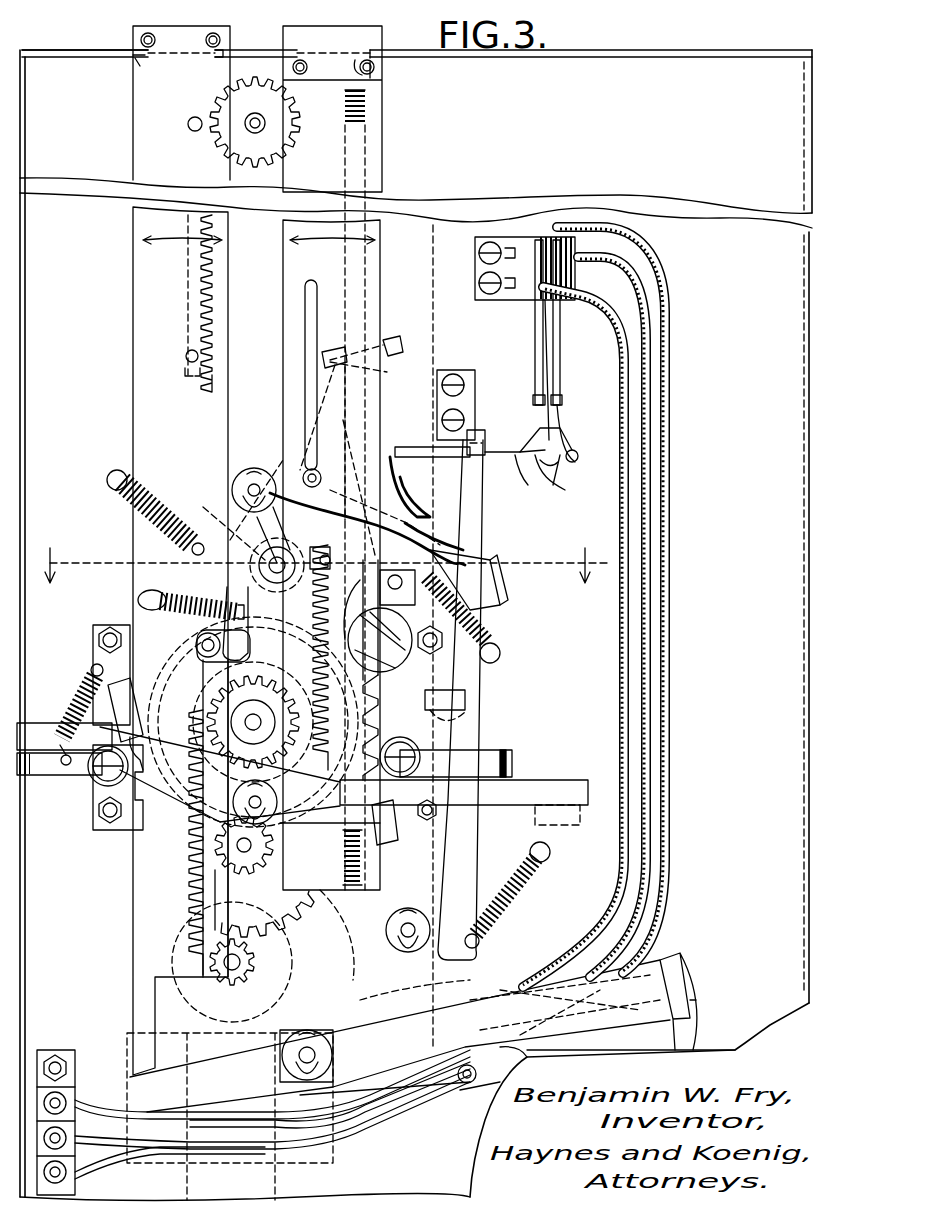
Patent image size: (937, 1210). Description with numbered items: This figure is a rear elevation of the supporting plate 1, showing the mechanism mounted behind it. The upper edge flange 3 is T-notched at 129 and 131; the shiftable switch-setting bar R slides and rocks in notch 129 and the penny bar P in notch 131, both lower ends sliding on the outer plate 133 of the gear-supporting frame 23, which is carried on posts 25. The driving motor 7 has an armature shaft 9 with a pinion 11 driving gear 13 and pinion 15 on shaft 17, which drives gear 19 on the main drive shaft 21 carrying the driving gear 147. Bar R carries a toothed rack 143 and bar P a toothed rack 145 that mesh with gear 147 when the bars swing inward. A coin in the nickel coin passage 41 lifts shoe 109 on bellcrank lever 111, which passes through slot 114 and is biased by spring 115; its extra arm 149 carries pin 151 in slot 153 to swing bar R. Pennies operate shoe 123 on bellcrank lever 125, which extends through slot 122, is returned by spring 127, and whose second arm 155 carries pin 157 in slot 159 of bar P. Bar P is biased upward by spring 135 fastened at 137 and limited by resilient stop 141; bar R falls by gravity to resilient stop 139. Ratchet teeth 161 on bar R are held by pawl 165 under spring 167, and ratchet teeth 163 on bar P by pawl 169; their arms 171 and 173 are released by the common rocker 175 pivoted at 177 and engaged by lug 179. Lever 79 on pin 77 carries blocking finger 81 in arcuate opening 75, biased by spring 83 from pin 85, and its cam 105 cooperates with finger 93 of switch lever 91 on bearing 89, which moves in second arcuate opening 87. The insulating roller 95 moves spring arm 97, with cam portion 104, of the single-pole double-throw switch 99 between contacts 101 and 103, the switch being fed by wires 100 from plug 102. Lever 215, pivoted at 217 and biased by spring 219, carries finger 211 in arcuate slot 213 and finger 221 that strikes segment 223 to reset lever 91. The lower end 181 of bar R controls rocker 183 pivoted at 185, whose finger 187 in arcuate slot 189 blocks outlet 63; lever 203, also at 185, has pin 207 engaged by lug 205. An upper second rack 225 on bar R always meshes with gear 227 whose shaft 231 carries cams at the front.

The supporting plate 1 is at (624, 66).
The upper edge flange 3 is at (488, 58).
The driving motor 7 is at (125, 975).
The armature shaft 9 is at (236, 978).
The pinion 11 is at (248, 970).
The gear 13 is at (290, 918).
The pinion 15 is at (238, 868).
The shaft 17 is at (268, 845).
The gear 19 is at (162, 672).
The main drive shaft 21 is at (252, 712).
The supporting frame 23 is at (82, 648).
The posts 25 is at (108, 628).
The 5¢ coin passage 41 is at (433, 285).
The outlet 63 is at (730, 1035).
The arcuate opening 75 is at (390, 343).
The pin 77 is at (412, 600).
The lever 79 is at (340, 410).
The blocking finger 81 is at (320, 358).
The spring 83 is at (490, 640).
The pin 85 is at (503, 656).
The second arcuate opening 87 is at (422, 490).
The bearing 89 is at (518, 485).
The switch lever 91 is at (512, 425).
The finger 93 is at (400, 458).
The insulating roller 95 is at (555, 450).
The spring arm 97 is at (553, 478).
The single-pole double-throw switch 99 is at (530, 225).
The wires 100 is at (630, 520).
The contact 101 is at (560, 365).
The plug 102 is at (55, 1055).
The contact 103 is at (533, 372).
The cam portion 104 is at (565, 435).
The cam 105 is at (412, 522).
The shoe 109 is at (495, 597).
The bellcrank lever 111 is at (275, 472).
The slot 114 is at (490, 575).
The spring 115 is at (148, 492).
The slot 122 is at (362, 615).
The shoe 123 is at (425, 650).
The bellcrank lever 125 is at (322, 595).
The spring 127 is at (180, 598).
The T-notch 129 is at (135, 58).
The T-notch 131 is at (378, 52).
The outer plate 133 is at (100, 785).
The spring 135 is at (365, 122).
The fastening point 137 is at (350, 895).
The resilient stop 139 is at (225, 48).
The resilient stop 141 is at (380, 78).
The toothed rack 143 is at (185, 880).
The toothed rack 145 is at (375, 668).
The driving gear 147 is at (280, 690).
The extra arm 149 is at (215, 520).
The pin 151 is at (198, 643).
The slot 153 is at (205, 680).
The second arm 155 is at (285, 492).
The pin 157 is at (318, 470).
The slot 159 is at (305, 327).
The ratchet teeth 161 is at (140, 845).
The ratchet teeth 163 is at (368, 742).
The pawl 165 is at (120, 695).
The spring 167 is at (65, 705).
The pawl 169 is at (385, 835).
The arm 171 is at (42, 770).
The arm 173 is at (495, 758).
The common rocker 175 is at (440, 800).
The pivot 177 is at (276, 800).
The lug 179 is at (560, 830).
The lower end of bar R 181 is at (135, 1055).
The rocker 183 is at (198, 1058).
The pivot 185 is at (333, 1052).
The finger 187 is at (685, 972).
The arcuate slot 189 is at (690, 1000).
The lever 203 is at (432, 1092).
The lug 205 is at (462, 1090).
The pin 207 is at (538, 1045).
The finger 211 is at (465, 712).
The arcuate slot 213 is at (465, 688).
The lever 215 is at (482, 478).
The pivot 217 is at (412, 952).
The spring 219 is at (505, 915).
The finger 221 is at (482, 430).
The segment 223 is at (535, 480).
The upper second rack 225 is at (200, 300).
The gear 227 is at (236, 90).
The shaft 231 is at (255, 128).
The switch-setting bar R is at (140, 128).
The switch-setting bar P is at (382, 118).